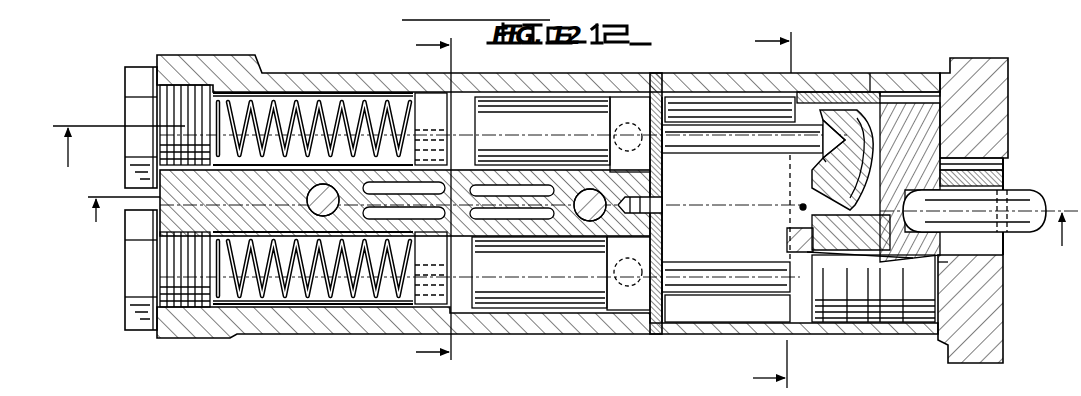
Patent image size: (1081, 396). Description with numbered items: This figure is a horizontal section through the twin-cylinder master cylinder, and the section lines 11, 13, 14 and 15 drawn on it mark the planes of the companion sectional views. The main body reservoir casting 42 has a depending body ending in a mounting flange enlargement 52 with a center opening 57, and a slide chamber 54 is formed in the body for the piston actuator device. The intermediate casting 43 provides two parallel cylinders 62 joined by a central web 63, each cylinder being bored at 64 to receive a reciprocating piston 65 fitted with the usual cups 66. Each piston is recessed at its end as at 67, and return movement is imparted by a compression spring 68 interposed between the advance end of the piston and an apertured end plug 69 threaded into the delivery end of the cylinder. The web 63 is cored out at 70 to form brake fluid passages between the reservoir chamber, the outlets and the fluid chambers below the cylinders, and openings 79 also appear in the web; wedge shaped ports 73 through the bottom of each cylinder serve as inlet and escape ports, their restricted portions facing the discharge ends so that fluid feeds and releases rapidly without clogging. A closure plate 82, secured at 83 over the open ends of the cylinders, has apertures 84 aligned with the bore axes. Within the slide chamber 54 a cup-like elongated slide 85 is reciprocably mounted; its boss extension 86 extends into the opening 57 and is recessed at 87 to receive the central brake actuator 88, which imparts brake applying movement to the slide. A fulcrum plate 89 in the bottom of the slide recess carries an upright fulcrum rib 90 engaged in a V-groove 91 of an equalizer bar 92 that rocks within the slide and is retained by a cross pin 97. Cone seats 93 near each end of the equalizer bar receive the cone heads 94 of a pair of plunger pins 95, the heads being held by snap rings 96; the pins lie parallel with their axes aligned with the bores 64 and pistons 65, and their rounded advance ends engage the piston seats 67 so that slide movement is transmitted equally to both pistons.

The section line 11- 11 is at (568, 233).
The section line 13- 13 is at (114, 152).
The section line 14- 14 is at (411, 198).
The section line 15- 15 is at (753, 208).
The main body reservoir casting 42 is at (907, 58).
The intermediate casting 43 is at (302, 80).
The mounting flange enlargement 52 is at (980, 68).
The slide chamber 54 is at (722, 103).
The center opening 57 is at (997, 255).
The cylinders 62 is at (378, 72).
The central web 63 is at (205, 213).
The cylinder bore 64 is at (247, 88).
The reciprocating piston 65 is at (540, 115).
The piston cups 66 is at (622, 105).
The piston end recess 67 is at (625, 128).
The compression spring 68 is at (308, 110).
The end plug 69 is at (137, 80).
The cored passages 70 is at (380, 183).
The wedge shaped ports 73 is at (445, 127).
The pin 79 is at (327, 182).
The closure plate 82 is at (661, 312).
The closure plate securing means 83 is at (664, 212).
The closure plate apertures 84 is at (670, 157).
The cup-like elongated slide 85 is at (890, 93).
The boss extension 86 is at (950, 163).
The actuator recess 87 is at (1003, 177).
The brake actuator 88 is at (1030, 200).
The fulcrum plate 89 is at (883, 120).
The fulcrum rib 90 is at (957, 262).
The V-groove 91 is at (815, 226).
The equalizer bar 92 is at (813, 240).
The cone seats 93 is at (850, 103).
The cone heads 94 is at (842, 110).
The plunger pins 95 is at (750, 130).
The cone tip 96 is at (817, 153).
The cross pin 97 is at (808, 194).